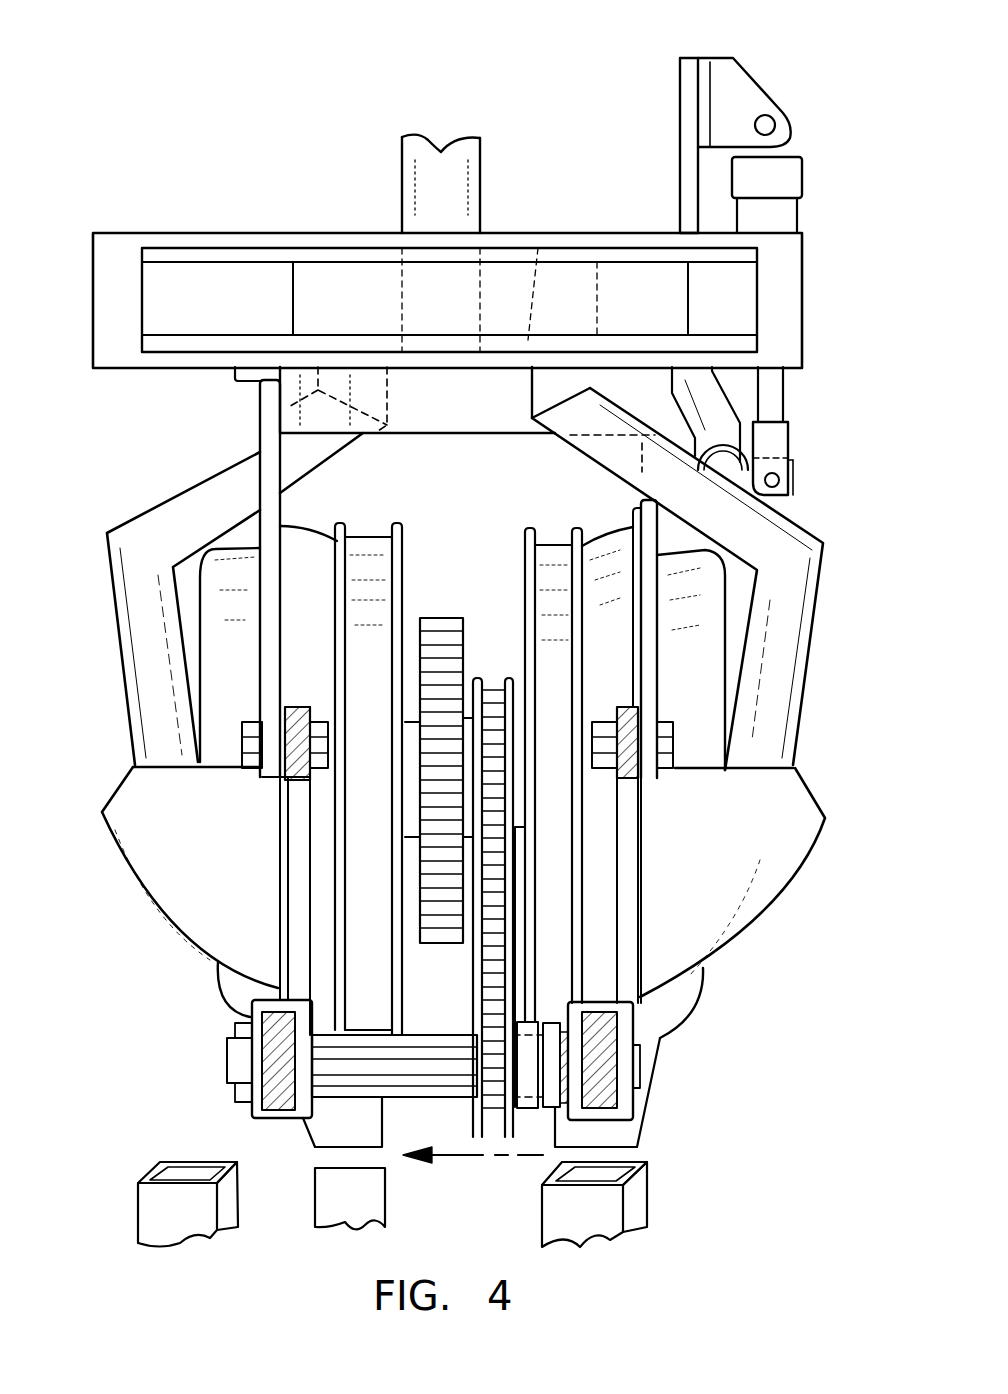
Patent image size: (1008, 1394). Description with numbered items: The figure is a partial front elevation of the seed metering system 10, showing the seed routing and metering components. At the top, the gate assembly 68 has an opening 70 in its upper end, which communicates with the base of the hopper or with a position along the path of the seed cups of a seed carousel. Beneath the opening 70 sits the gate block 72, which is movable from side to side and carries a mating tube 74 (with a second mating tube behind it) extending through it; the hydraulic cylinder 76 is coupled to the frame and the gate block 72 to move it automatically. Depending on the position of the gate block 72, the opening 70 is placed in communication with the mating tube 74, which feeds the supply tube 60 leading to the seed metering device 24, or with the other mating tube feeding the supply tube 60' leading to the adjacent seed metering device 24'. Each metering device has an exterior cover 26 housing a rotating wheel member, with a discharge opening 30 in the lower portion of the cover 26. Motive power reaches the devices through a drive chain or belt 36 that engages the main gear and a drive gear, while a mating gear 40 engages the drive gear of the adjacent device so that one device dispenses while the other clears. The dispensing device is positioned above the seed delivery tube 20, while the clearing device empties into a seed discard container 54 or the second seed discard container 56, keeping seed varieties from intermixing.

The seed metering system 10 is at (104, 172).
The seed delivery tube 20 is at (325, 1188).
The seed metering device 24 is at (738, 549).
The seed metering device 24' is at (212, 605).
The exterior cover 26 is at (698, 693).
The discharge opening 30 is at (601, 1149).
The drive chain or belt 36 is at (493, 946).
The mating gear 40 is at (440, 638).
The seed discard container 54 is at (158, 1223).
The second seed discard container 56 is at (602, 1210).
The supply tube 60 is at (712, 579).
The supply tube 60' is at (200, 600).
The gate assembly 68 is at (388, 215).
The opening 70 is at (452, 134).
The gate block 72 is at (340, 313).
The mating tube 74 is at (541, 282).
The hydraulic cylinder 76 is at (786, 212).